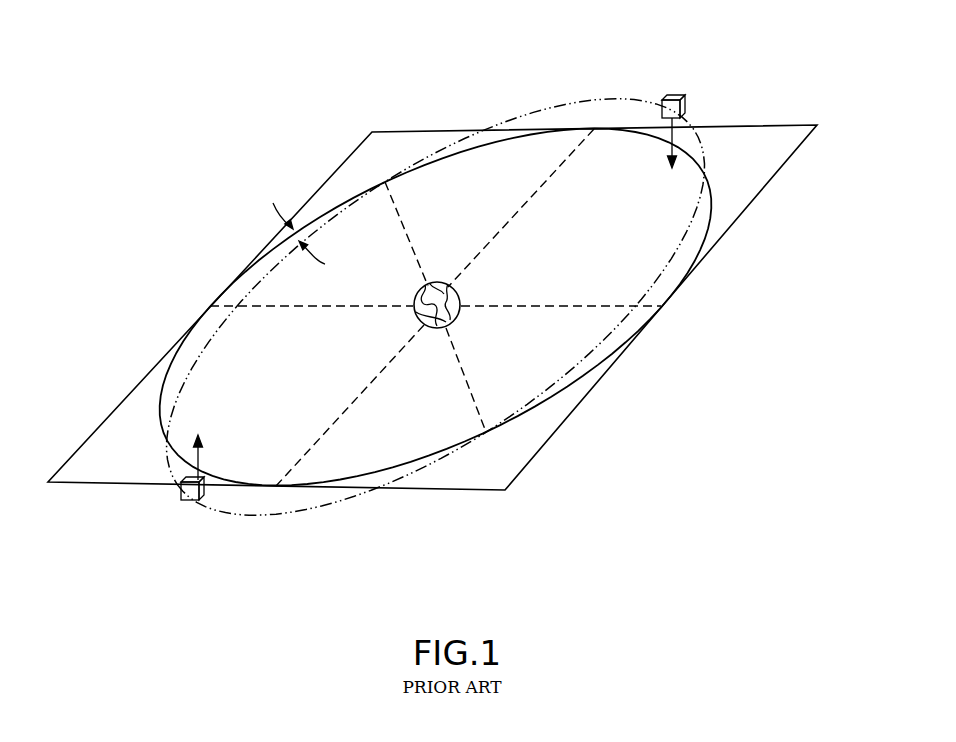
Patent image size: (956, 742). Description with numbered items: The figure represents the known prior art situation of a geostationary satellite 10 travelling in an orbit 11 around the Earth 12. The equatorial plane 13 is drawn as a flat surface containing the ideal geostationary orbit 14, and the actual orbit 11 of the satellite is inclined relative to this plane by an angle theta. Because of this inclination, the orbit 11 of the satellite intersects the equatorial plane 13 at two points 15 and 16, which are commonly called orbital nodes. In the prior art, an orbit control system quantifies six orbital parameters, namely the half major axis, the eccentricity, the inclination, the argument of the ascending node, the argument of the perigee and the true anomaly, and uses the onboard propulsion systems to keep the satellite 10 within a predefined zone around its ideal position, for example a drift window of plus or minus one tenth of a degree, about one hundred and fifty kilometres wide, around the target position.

The geostationary satellite 10 is at (180, 492).
The orbit 11 is at (525, 112).
The Earth 12 is at (461, 298).
The equatorial plane 13 is at (730, 223).
The ideal geostationary orbit 14 is at (562, 393).
The orbital node 15 is at (486, 435).
The orbital node 16 is at (388, 185).